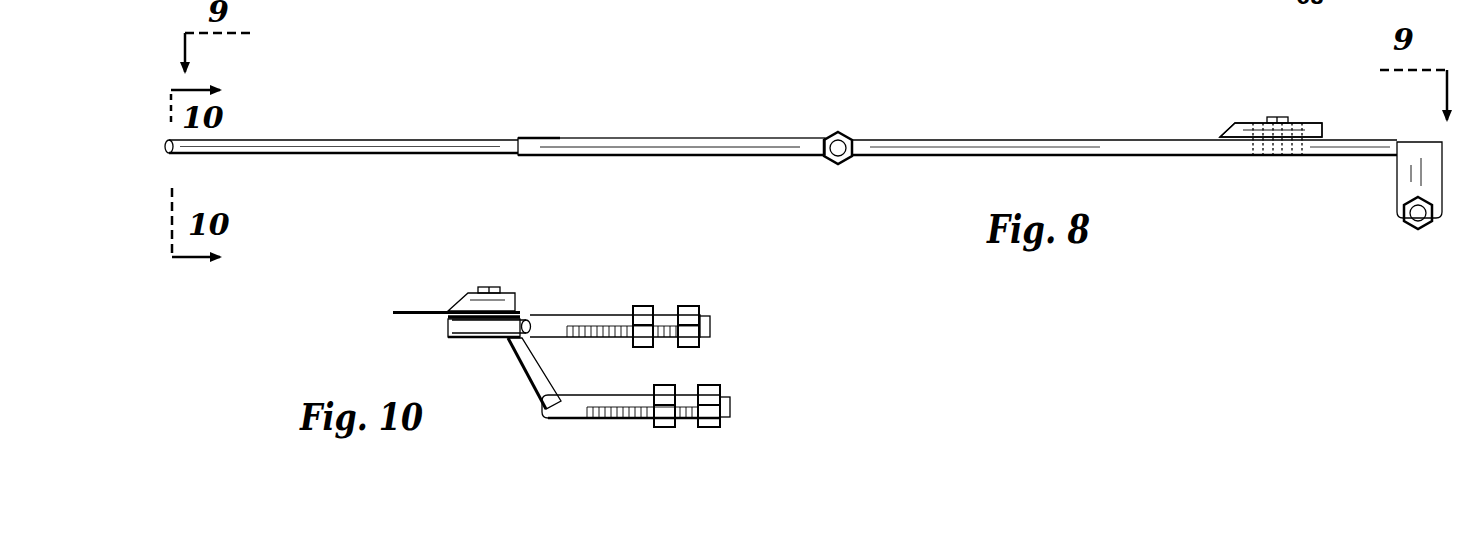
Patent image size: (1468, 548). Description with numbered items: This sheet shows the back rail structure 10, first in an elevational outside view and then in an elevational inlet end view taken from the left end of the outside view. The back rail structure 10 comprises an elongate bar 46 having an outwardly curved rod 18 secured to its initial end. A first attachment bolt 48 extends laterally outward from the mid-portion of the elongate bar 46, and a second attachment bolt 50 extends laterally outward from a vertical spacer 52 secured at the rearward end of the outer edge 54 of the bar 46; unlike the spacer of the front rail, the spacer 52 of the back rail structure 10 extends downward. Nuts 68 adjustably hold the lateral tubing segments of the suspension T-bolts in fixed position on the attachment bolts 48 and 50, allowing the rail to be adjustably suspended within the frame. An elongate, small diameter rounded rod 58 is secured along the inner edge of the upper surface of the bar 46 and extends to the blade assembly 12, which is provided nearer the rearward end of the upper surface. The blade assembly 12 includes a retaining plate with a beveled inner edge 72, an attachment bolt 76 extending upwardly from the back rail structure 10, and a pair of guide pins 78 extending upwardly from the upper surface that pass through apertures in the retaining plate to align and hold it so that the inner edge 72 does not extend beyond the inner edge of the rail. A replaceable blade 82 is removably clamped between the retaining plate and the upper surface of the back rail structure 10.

In FIG. 8, the back rail structure 10 is at (533, 110).
In FIG. 8, the blade assembly 12 is at (1310, 126).
In FIG. 10, the blade assembly 12 is at (504, 300).
In FIG. 8, the outwardly curved rod 18 is at (388, 142).
In FIG. 10, the outwardly curved rod 18 is at (450, 336).
In FIG. 8, the elongate bar 46 is at (1082, 147).
In FIG. 8, the first attachment bolt 48 is at (835, 142).
In FIG. 10, the first attachment bolt 48 is at (610, 322).
In FIG. 8, the second attachment bolt 50 is at (1418, 222).
In FIG. 10, the second attachment bolt 50 is at (728, 400).
In FIG. 8, the vertical spacer 52 is at (1403, 180).
In FIG. 10, the vertical spacer 52 is at (528, 364).
In FIG. 8, the outer edge 54 is at (728, 147).
In FIG. 8, the rounded rod 58 is at (641, 138).
In FIG. 10, the rounded rod 58 is at (448, 312).
In FIG. 8, the nuts 68 is at (845, 135).
In FIG. 10, the nuts 68 is at (690, 312).
In FIG. 8, the beveled inner edge 72 is at (1224, 128).
In FIG. 8, the attachment bolt 76 is at (1270, 115).
In FIG. 10, the attachment bolt 76 is at (480, 286).
In FIG. 8, the guide pins 78 is at (1290, 158).
In FIG. 10, the replaceable blade 82 is at (395, 311).